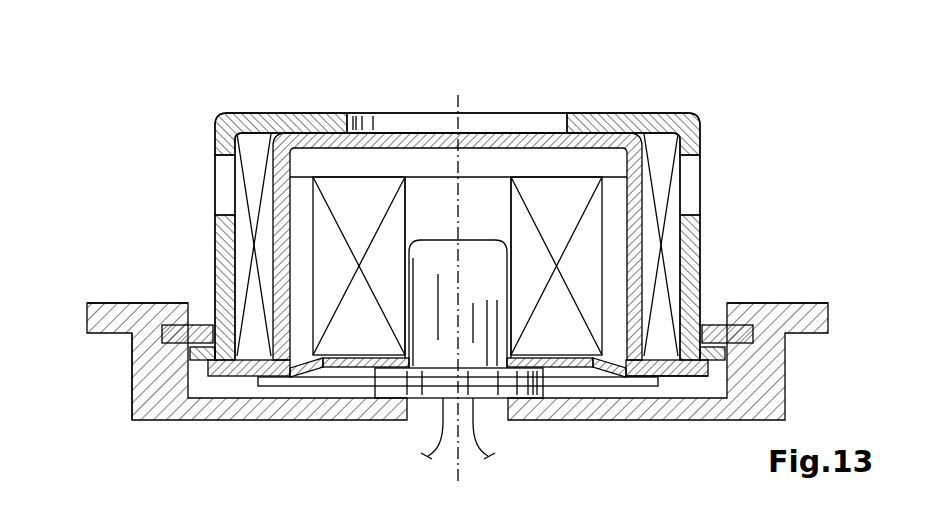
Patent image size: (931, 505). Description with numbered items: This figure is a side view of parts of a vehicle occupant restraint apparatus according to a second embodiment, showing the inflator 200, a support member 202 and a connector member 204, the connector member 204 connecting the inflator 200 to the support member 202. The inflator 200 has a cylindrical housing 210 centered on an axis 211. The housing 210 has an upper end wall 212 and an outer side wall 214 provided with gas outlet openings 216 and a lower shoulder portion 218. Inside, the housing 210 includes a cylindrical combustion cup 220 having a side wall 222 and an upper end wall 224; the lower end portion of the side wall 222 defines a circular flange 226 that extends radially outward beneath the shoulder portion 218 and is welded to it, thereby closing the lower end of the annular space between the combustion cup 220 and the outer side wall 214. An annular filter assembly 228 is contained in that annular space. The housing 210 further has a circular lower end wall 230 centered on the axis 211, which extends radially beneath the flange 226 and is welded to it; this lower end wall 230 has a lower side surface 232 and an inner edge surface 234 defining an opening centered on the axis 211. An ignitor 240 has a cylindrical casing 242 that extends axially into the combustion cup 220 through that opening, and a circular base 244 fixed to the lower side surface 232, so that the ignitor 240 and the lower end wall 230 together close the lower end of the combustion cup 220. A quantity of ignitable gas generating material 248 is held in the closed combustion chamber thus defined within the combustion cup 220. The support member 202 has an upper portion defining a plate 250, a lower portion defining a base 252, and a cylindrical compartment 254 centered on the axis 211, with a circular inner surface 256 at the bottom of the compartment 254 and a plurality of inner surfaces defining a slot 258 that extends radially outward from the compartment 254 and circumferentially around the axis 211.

The inflator 200 is at (256, 89).
The support member 202 is at (112, 302).
The connector member 204 is at (716, 322).
The housing 210 is at (213, 110).
The axis 211 is at (445, 86).
The upper end wall 212 is at (310, 112).
The outer side wall 214 is at (226, 246).
The gas outlet openings 216 is at (222, 172).
The lower shoulder portion 218 is at (185, 380).
The combustion cup 220 is at (507, 112).
The side wall 222 is at (692, 114).
The upper end wall 224 is at (556, 136).
The flange 226 is at (678, 378).
The filter assembly 228 is at (662, 202).
The lower end wall 230 is at (326, 374).
The lower side surface 232 is at (341, 372).
The inner edge surface 234 is at (402, 372).
The ignitor 240 is at (479, 237).
The casing 242 is at (489, 270).
The base 244 is at (545, 380).
The gas generating material 248 is at (358, 176).
The plate 250 is at (100, 318).
The base 252 is at (142, 384).
The compartment 254 is at (202, 322).
The inner surface 256 is at (230, 392).
The slot 258 is at (756, 322).